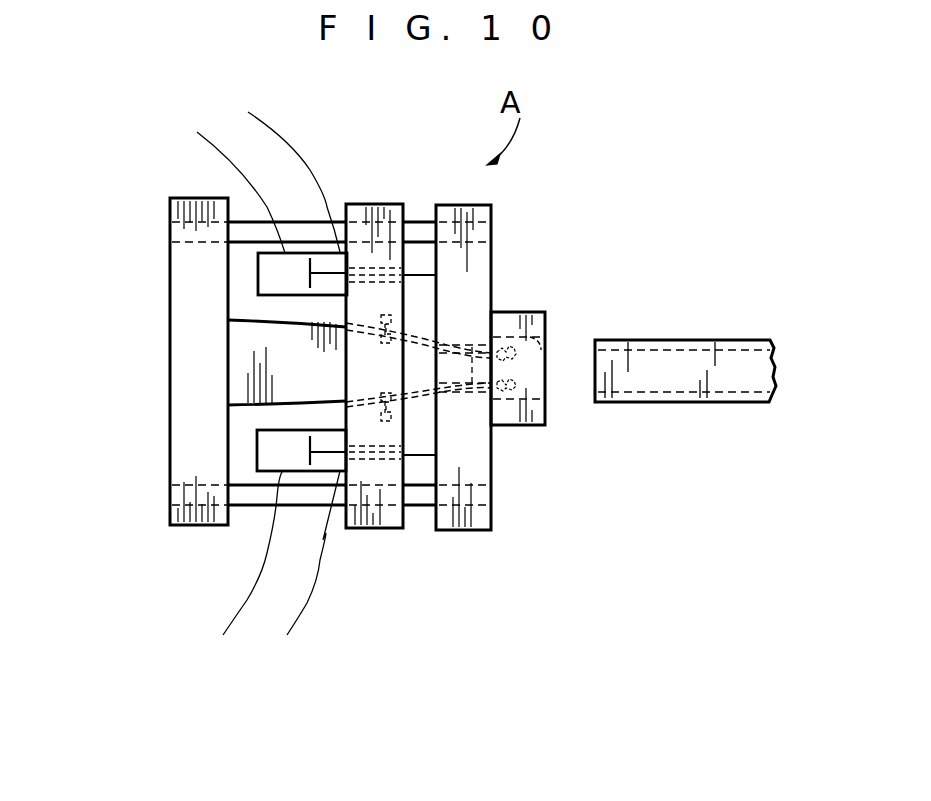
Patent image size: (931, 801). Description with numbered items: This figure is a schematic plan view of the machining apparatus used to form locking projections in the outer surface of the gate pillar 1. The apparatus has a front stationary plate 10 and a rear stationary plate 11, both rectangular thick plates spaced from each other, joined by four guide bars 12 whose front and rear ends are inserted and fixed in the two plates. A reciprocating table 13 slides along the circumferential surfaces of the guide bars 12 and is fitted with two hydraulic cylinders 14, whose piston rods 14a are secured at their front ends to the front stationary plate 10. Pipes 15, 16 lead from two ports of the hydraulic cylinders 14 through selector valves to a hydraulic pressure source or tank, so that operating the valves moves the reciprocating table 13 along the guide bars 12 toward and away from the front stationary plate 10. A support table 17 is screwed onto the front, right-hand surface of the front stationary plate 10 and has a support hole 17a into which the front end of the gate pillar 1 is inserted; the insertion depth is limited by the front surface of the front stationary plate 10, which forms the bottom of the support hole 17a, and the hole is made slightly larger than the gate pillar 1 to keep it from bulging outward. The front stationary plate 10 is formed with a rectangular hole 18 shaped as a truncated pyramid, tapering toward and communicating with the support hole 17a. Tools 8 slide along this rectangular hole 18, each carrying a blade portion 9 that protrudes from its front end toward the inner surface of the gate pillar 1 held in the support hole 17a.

The gate pillar 1 is at (681, 340).
The tool 8 is at (453, 397).
The blade portion 9 is at (547, 414).
The front stationary plate 10 is at (472, 531).
The rear stationary plate 11 is at (170, 528).
The guide bar 12 is at (255, 232).
The reciprocating table 13 is at (372, 518).
The hydraulic cylinder 14 is at (258, 268).
The piston rod 14a is at (416, 275).
The pipe 15 is at (262, 195).
The pipe 16 is at (300, 155).
The support table 17 is at (518, 312).
The support hole 17a is at (548, 350).
The rectangular hole 18 is at (500, 417).